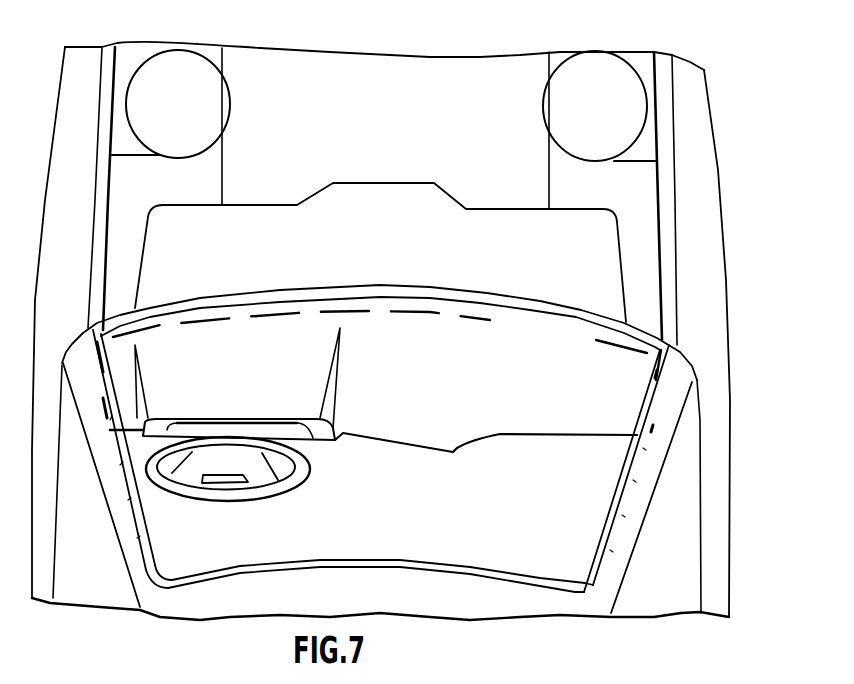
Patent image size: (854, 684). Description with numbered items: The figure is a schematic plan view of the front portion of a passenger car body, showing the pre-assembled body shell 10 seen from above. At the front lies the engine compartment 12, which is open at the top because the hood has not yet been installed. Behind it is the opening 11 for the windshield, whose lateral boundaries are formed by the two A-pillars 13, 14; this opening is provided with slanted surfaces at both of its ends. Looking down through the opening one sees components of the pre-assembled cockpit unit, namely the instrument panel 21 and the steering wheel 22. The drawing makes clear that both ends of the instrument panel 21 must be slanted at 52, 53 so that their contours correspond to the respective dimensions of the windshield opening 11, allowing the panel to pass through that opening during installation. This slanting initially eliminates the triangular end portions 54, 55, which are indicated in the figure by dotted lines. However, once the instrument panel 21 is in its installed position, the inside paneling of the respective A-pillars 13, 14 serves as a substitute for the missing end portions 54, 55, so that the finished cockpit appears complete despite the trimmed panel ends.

The body shell 10 is at (739, 462).
The opening for the windshield 11 is at (414, 547).
The engine compartment 12 is at (381, 128).
The A-pillar 13 is at (108, 485).
The A-pillar 14 is at (624, 550).
The instrument panel 21 is at (512, 437).
The steering wheel 22 is at (308, 470).
The slanted end 52 is at (656, 402).
The slanted end 53 is at (108, 392).
The triangular end portion 54 is at (655, 427).
The triangular end portion 55 is at (102, 422).